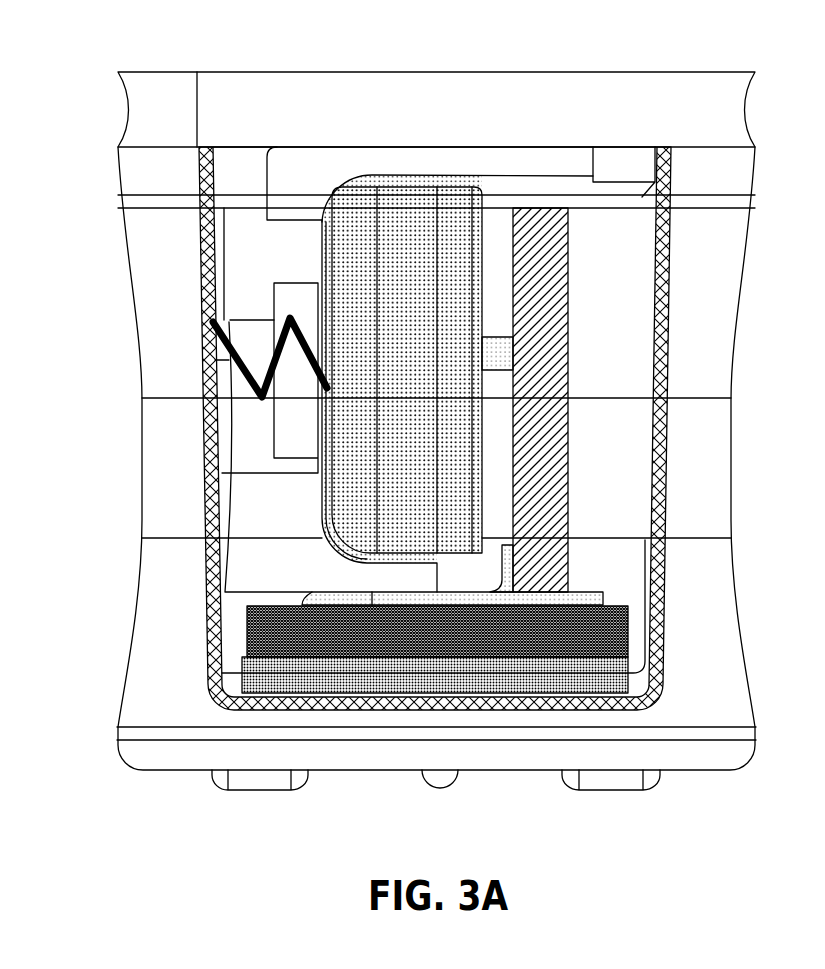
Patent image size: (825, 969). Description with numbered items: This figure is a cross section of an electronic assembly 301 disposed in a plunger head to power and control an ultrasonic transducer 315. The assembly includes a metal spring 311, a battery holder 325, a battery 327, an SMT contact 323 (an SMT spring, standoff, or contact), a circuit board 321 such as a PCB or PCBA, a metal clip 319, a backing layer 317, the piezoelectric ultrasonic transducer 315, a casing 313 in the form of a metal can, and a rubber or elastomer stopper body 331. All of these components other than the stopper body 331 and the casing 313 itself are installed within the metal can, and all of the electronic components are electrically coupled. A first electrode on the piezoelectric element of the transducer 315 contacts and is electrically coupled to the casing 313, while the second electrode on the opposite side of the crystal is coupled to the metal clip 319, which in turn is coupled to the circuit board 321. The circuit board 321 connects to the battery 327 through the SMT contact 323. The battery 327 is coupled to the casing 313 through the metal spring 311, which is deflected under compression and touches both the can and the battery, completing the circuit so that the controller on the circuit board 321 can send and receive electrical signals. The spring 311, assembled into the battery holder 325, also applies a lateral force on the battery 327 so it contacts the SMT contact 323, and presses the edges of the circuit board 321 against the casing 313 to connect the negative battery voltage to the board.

The electronic assembly 301 is at (459, 44).
The metal spring 311 is at (230, 358).
The casing 313 is at (467, 692).
The ultrasonic transducer 315 is at (370, 682).
The backing layer 317 is at (352, 652).
The metal clip 319 is at (603, 598).
The circuit board 321 is at (547, 465).
The SMT contact 323 is at (507, 349).
The battery holder 325 is at (567, 157).
The battery 327 is at (341, 222).
The stopper body 331 is at (145, 260).